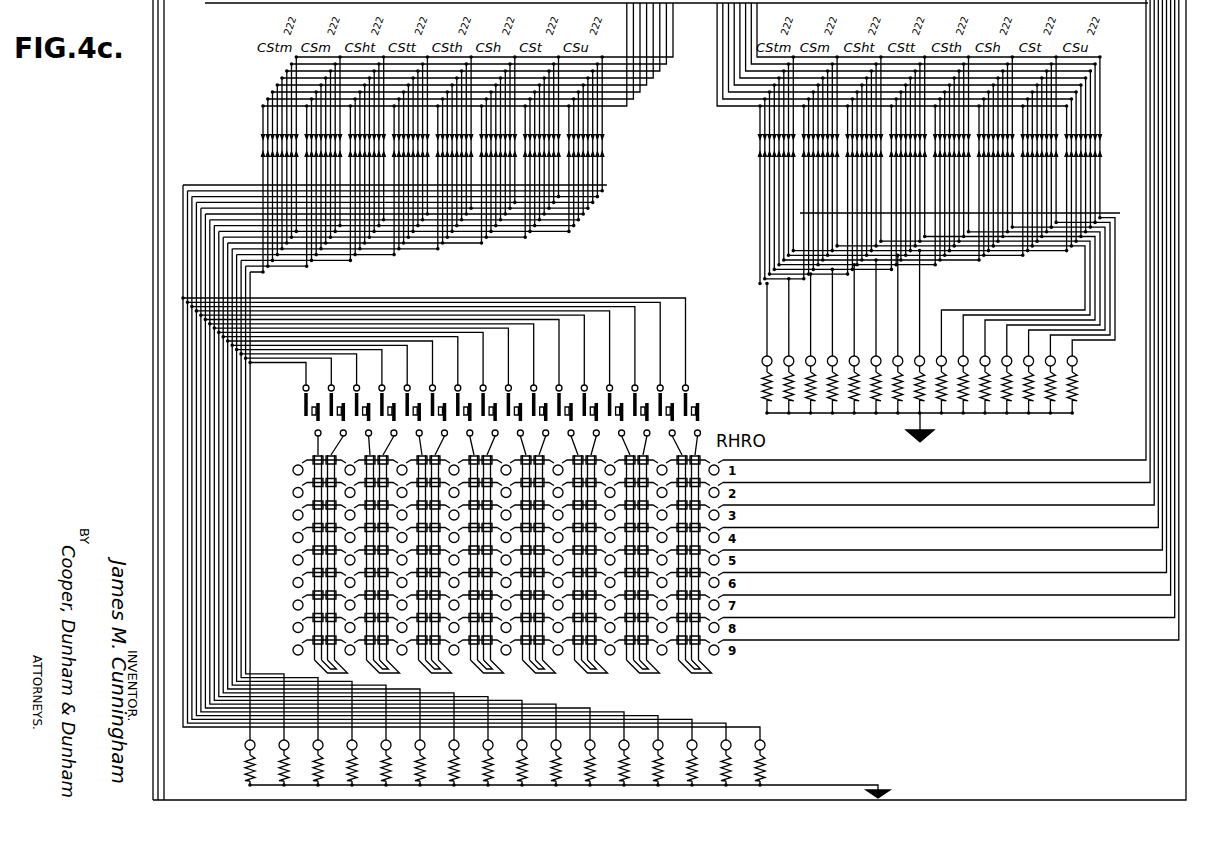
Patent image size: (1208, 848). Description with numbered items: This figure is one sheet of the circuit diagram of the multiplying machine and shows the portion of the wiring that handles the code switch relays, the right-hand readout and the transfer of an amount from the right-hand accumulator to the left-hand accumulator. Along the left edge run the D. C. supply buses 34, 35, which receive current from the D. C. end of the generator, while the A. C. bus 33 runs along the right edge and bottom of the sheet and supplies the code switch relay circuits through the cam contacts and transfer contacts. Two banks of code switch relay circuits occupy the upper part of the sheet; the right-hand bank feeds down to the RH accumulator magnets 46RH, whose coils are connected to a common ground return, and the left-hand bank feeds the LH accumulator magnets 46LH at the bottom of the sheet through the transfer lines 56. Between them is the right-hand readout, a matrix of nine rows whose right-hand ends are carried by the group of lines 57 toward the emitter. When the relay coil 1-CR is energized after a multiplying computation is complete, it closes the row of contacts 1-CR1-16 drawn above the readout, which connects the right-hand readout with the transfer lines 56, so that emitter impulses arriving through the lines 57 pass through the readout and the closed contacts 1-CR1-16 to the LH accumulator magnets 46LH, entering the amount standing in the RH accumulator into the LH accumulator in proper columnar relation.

The A. C. bus 33 is at (669, 400).
The D. C. line 34 is at (179, 400).
The D. C. line 35 is at (186, 400).
The transfer lines 56 is at (434, 330).
The group of lines 57 is at (951, 339).
The RH accumulator magnets 46RH is at (945, 399).
The LH accumulator magnets 46LH is at (567, 769).
The relay contacts 1-CR-1 to 16 1-CR1-16 is at (530, 393).
The relay coil 1-CR is at (715, 411).